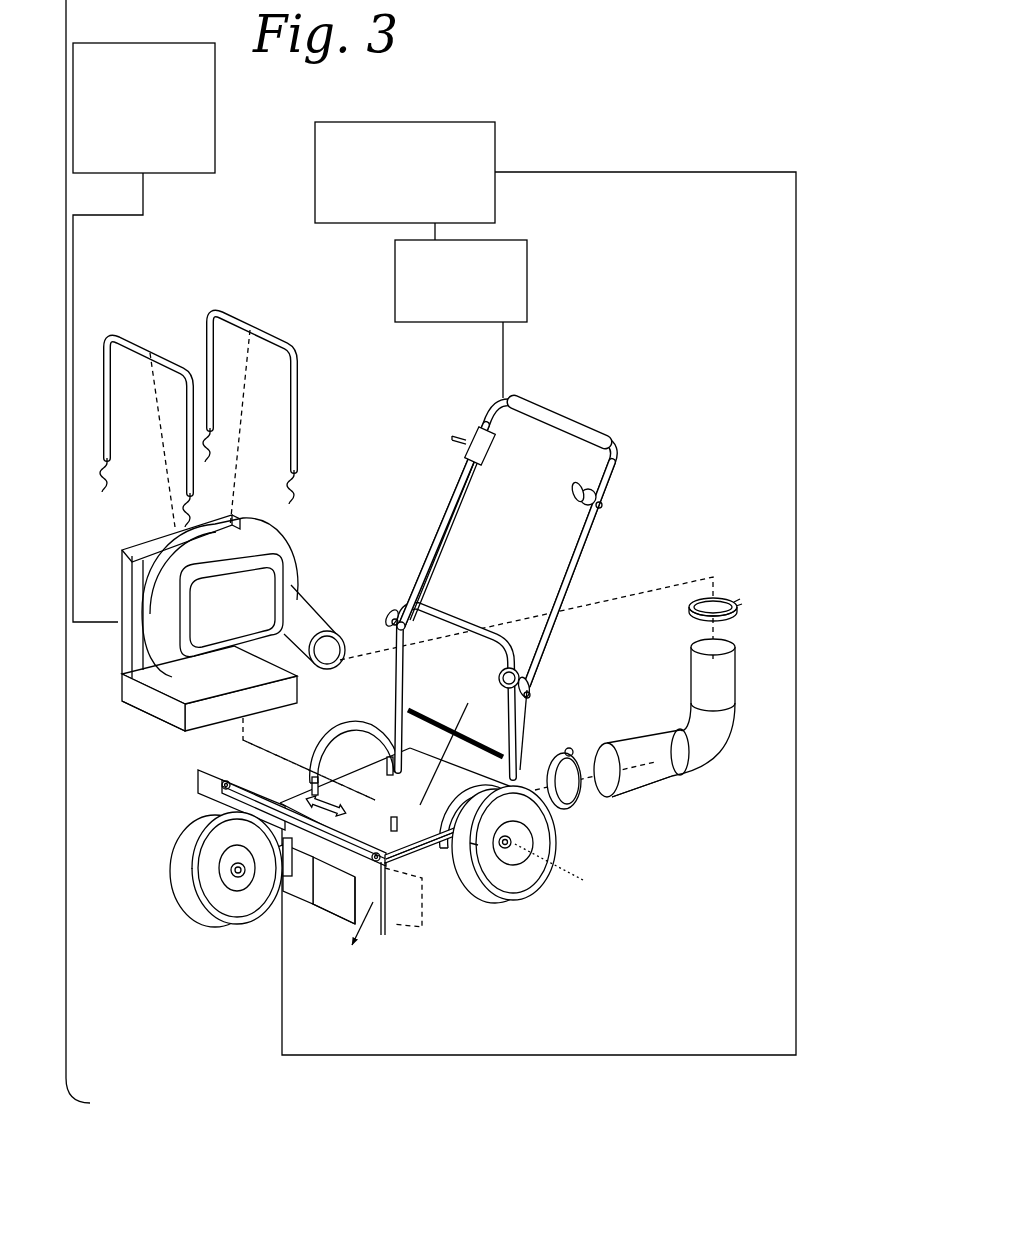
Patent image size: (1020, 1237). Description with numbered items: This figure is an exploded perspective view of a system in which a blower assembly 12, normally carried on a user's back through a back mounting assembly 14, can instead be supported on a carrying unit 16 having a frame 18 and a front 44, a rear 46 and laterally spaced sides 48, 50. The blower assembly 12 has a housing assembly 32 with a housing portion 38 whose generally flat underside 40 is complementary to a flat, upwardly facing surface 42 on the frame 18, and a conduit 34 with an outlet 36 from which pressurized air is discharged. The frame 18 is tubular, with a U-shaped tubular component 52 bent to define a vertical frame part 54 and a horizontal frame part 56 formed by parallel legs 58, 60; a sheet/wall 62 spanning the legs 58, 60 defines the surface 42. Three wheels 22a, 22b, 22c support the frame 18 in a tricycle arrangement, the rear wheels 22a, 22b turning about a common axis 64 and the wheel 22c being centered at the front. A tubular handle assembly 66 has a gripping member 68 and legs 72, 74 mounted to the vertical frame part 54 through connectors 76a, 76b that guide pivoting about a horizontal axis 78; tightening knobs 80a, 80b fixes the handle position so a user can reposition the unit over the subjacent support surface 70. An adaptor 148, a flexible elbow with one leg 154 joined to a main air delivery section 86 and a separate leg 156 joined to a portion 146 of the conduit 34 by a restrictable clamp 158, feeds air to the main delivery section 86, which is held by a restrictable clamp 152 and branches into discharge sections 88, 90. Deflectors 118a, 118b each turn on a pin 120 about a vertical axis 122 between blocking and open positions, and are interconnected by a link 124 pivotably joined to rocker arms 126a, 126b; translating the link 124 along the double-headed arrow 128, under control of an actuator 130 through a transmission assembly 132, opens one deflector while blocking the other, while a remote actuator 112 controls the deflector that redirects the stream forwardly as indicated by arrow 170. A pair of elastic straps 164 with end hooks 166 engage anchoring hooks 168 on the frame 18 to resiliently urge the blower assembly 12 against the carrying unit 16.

The blower assembly 12 is at (262, 560).
The back mounting assembly 14 is at (153, 157).
The carrying unit 16 is at (310, 922).
The frame 18 is at (426, 708).
The wheel 22a is at (543, 843).
The wheel 22b is at (462, 616).
The wheel 22c is at (204, 921).
The housing assembly 32 is at (122, 692).
The conduit 34 is at (311, 627).
The outlet 36 is at (337, 640).
The housing portion 38 is at (185, 712).
The underside 40 is at (190, 737).
The surface 42 is at (407, 800).
The front 44 is at (146, 882).
The rear 46 is at (542, 678).
The side 48 is at (286, 791).
The side 50 is at (414, 845).
The U-shaped tubular component 52 is at (503, 645).
The vertical frame part 54 is at (537, 604).
The horizontal frame part 56 is at (530, 894).
The leg 58 is at (493, 874).
The leg 60 is at (262, 777).
The sheet/wall 62 is at (455, 830).
The axis 64 is at (583, 880).
The handle assembly 66 is at (590, 557).
The member 68 is at (555, 418).
The subjacent support surface 70 is at (323, 976).
The leg 72 is at (594, 527).
The leg 74 is at (453, 508).
The connector 76a is at (404, 596).
The connector 76b is at (538, 667).
The axis 78 is at (548, 700).
The knob 80a is at (396, 616).
The knob 80b is at (533, 692).
The main air delivery section 86 is at (650, 751).
The air discharge section 88 is at (307, 907).
The air discharge section 90 is at (197, 802).
The actuator 112 is at (456, 427).
The deflector 118a is at (381, 918).
The deflector 118b is at (203, 778).
The pin 120 is at (338, 866).
The axis 122 is at (388, 937).
The link 124 is at (468, 714).
The rocker arm 126a is at (558, 817).
The rocker arm 126b is at (176, 845).
The double-headed arrow 128 is at (226, 862).
The actuator 130 is at (476, 305).
The transmission assembly 132 is at (420, 213).
The portion 146 is at (390, 619).
The adaptor 148 is at (706, 740).
The restrictable clamp 152 is at (617, 800).
The leg 154 is at (670, 777).
The leg 156 is at (736, 650).
The restrictable clamp 158 is at (714, 597).
The elastic strap 164 is at (224, 312).
The end hook 166 is at (190, 503).
The anchoring hook 168 is at (316, 780).
The arrow 170 is at (373, 902).